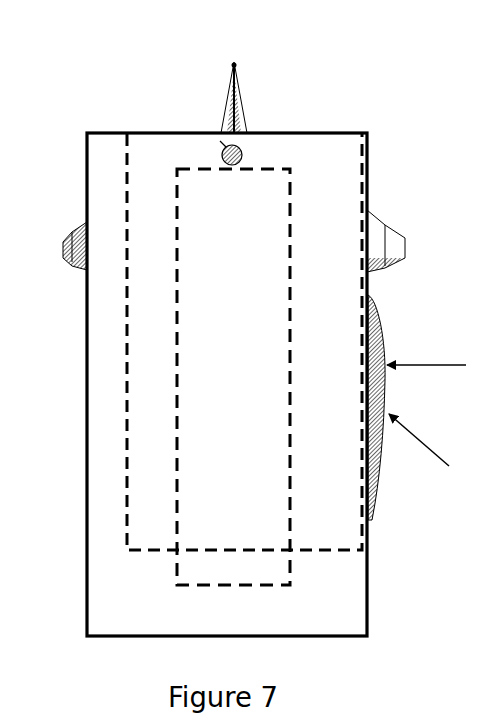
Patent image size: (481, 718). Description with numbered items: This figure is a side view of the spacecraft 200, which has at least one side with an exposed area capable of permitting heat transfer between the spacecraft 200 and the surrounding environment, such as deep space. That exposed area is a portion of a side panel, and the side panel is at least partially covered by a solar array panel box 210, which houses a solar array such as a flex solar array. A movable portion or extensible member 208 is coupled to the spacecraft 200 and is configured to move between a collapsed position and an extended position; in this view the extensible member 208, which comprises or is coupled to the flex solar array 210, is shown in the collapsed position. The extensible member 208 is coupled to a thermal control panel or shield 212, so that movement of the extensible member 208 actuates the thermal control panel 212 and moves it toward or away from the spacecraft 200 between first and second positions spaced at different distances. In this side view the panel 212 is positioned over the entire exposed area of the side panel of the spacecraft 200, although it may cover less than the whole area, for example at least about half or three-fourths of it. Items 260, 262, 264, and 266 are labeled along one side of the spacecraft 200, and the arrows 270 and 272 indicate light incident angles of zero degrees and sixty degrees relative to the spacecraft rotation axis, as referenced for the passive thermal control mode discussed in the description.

The spacecraft 200 is at (358, 62).
The extensible member 208 is at (224, 147).
The solar array panel box 210 is at (205, 382).
The thermal control panel 212 is at (108, 160).
The side element 260 is at (480, 256).
The side element 262 is at (470, 165).
The side element 264 is at (478, 203).
The side element 266 is at (477, 293).
The 0 degree direction arrow 270 is at (447, 366).
The 60 degree direction arrow 272 is at (430, 450).